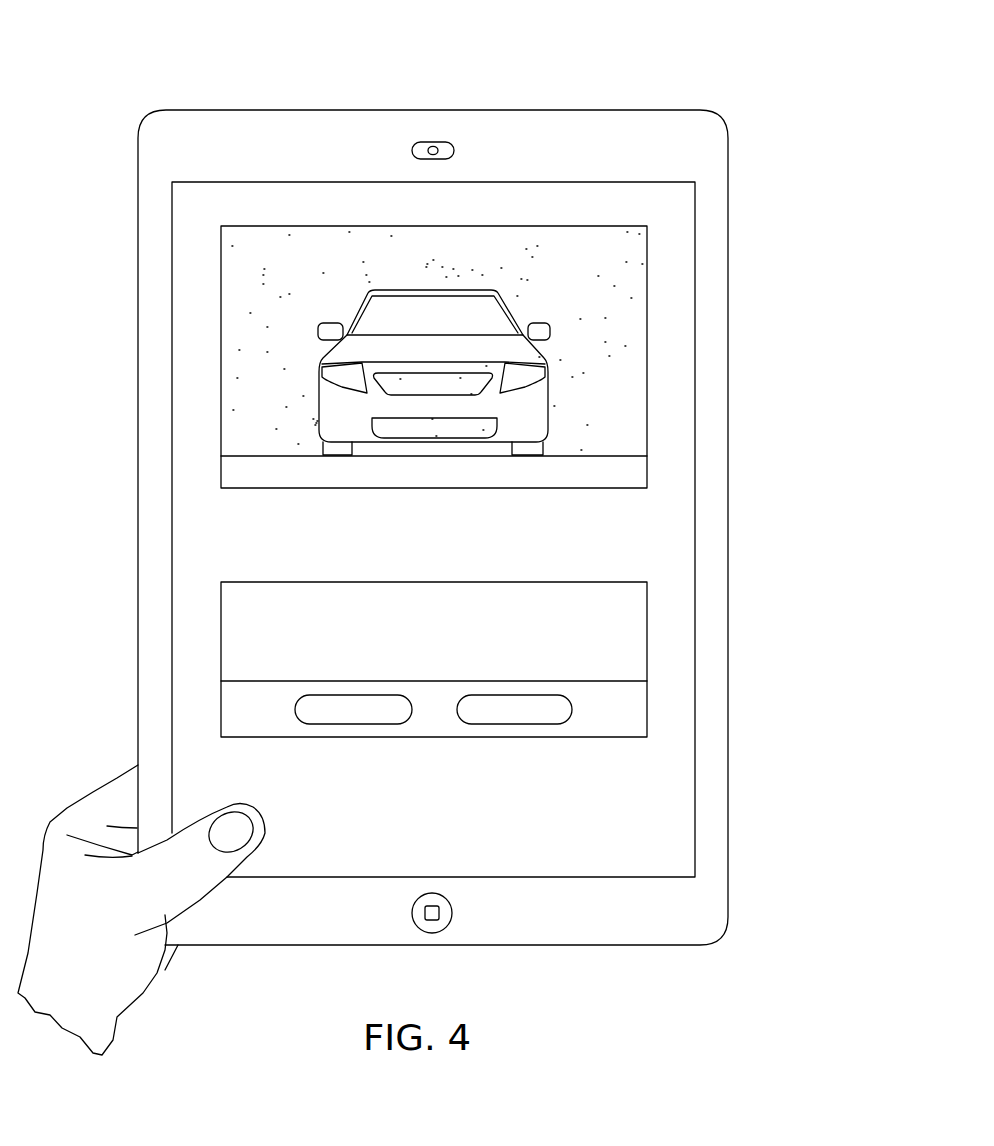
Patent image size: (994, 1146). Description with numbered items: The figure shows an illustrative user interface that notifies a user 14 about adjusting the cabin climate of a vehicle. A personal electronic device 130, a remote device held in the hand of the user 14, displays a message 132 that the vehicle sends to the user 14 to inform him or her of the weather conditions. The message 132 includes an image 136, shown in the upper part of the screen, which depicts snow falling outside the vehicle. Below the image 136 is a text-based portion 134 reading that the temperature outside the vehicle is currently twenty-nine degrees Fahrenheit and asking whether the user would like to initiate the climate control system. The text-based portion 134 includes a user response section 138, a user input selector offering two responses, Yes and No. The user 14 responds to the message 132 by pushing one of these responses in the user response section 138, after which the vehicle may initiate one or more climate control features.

The user 14 is at (92, 798).
The personal electronic device 130 is at (200, 110).
The message 132 is at (766, 99).
The text-based portion 134 is at (253, 582).
The image 136 is at (302, 226).
The user response section 138 is at (257, 728).